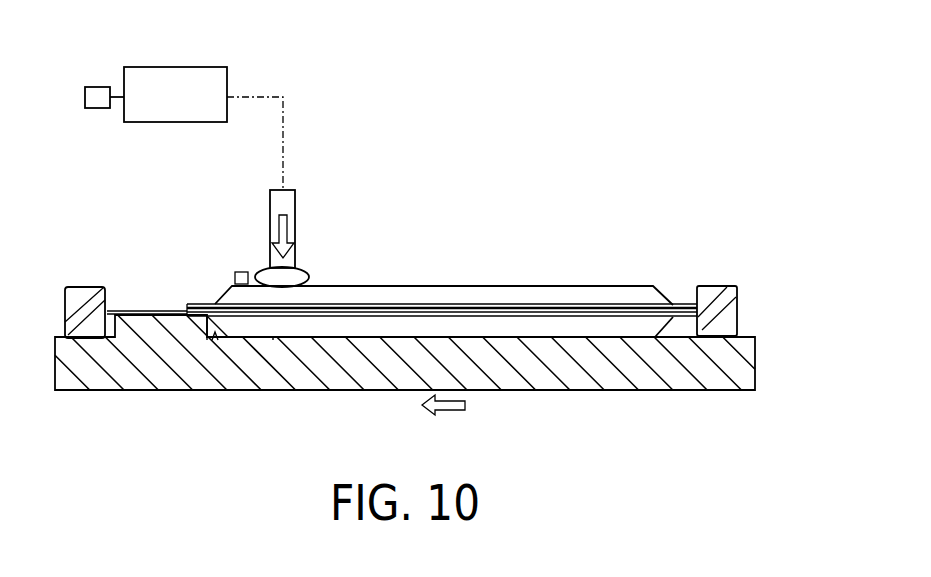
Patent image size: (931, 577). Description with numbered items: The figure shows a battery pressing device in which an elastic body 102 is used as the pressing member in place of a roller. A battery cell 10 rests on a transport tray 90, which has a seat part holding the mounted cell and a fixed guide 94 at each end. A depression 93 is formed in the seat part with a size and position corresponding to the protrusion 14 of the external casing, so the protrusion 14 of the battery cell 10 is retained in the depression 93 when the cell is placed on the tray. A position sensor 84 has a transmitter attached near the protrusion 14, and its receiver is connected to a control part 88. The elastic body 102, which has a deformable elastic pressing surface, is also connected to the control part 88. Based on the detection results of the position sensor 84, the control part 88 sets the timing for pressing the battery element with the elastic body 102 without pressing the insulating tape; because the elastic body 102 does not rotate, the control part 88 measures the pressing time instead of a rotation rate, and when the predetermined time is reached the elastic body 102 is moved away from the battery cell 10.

The battery cell 10 is at (513, 286).
The protrusion 14 is at (228, 284).
The position sensor 84 is at (95, 88).
The control part 88 is at (207, 72).
The transport tray 90 is at (768, 371).
The depression 93 is at (217, 331).
The fixed guide 94 is at (85, 292).
The elastic body 102 is at (308, 274).